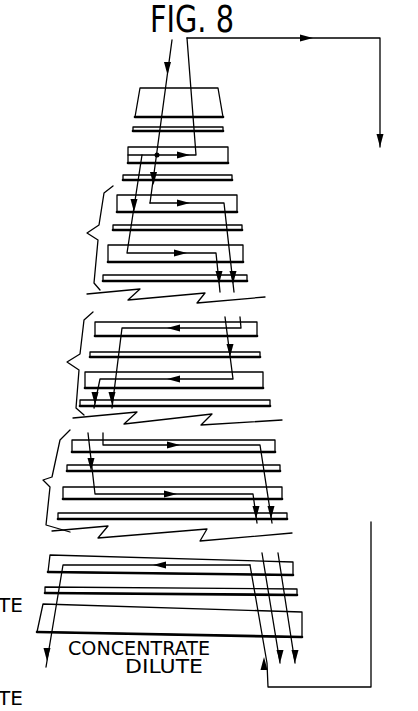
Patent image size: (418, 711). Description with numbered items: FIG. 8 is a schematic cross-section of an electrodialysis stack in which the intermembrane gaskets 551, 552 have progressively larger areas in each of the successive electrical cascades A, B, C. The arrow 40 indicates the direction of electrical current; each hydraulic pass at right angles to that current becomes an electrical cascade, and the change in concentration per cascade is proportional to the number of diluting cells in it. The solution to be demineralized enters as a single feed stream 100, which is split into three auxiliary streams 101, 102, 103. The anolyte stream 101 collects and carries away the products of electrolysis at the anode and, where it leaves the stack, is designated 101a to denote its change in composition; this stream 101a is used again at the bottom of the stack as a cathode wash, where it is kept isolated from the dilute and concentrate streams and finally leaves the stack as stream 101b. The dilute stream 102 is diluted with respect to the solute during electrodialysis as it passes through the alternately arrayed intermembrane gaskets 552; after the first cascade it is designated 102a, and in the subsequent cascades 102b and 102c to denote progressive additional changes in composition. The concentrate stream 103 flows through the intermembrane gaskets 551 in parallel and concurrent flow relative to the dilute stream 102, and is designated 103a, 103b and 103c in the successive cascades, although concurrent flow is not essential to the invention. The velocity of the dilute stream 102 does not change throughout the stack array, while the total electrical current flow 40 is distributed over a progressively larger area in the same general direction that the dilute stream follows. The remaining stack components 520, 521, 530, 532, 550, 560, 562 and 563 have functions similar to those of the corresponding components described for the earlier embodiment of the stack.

The electrical current flow arrow 40 is at (88, 197).
The feed stream 100 is at (171, 50).
The anolyte stream 101 is at (191, 137).
The anolyte stream effluent 101a is at (267, 38).
The catholyte stream effluent 101b is at (184, 545).
The dilute stream 102 is at (186, 252).
The dilute stream after first cascade 102a is at (198, 378).
The dilute stream after second cascade 102b is at (191, 497).
The dilute stream after third cascade 102c is at (264, 662).
The concentrate stream 103 is at (193, 202).
The concentrate stream after first cascade 103a is at (201, 327).
The concentrate stream after second cascade 103b is at (194, 443).
The concentrate stream after third cascade 103c is at (285, 616).
The membrane 520 is at (232, 178).
The membrane 521 is at (242, 228).
The membrane 530 is at (223, 129).
The membrane 532 is at (297, 591).
The spacer frame 550 is at (228, 155).
The intermembrane gasket 551 is at (237, 204).
The intermembrane gasket 552 is at (243, 253).
The end electrode block 560 is at (223, 101).
The end electrode block 562 is at (302, 623).
The end spacer frame 563 is at (293, 566).
The first electrical cascade A is at (91, 238).
The second electrical cascade B is at (69, 363).
The third electrical cascade C is at (48, 481).